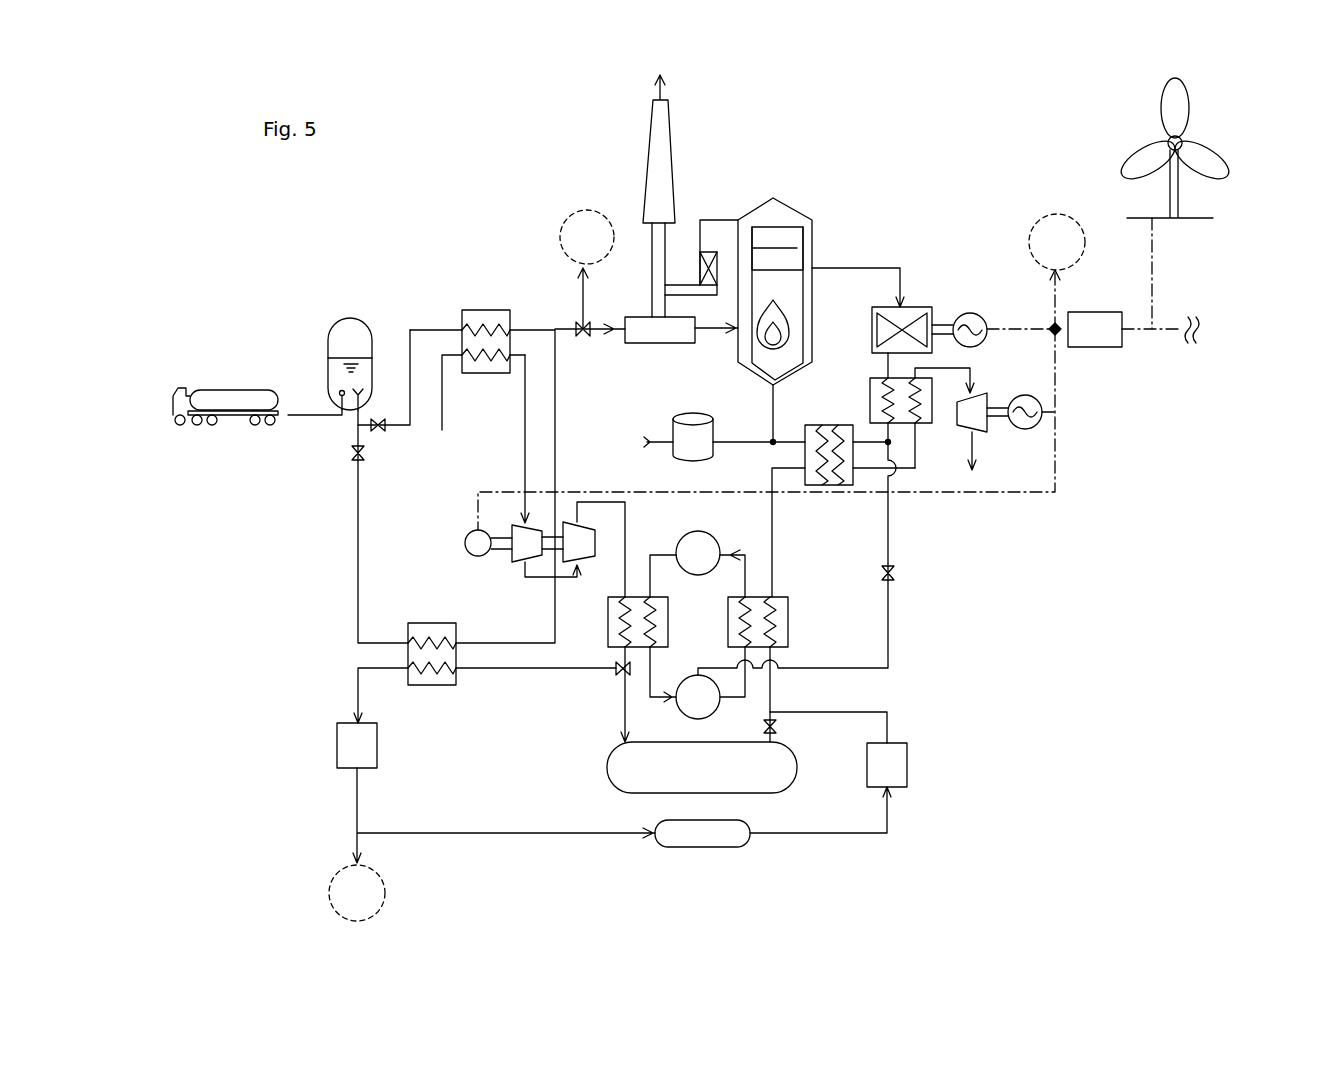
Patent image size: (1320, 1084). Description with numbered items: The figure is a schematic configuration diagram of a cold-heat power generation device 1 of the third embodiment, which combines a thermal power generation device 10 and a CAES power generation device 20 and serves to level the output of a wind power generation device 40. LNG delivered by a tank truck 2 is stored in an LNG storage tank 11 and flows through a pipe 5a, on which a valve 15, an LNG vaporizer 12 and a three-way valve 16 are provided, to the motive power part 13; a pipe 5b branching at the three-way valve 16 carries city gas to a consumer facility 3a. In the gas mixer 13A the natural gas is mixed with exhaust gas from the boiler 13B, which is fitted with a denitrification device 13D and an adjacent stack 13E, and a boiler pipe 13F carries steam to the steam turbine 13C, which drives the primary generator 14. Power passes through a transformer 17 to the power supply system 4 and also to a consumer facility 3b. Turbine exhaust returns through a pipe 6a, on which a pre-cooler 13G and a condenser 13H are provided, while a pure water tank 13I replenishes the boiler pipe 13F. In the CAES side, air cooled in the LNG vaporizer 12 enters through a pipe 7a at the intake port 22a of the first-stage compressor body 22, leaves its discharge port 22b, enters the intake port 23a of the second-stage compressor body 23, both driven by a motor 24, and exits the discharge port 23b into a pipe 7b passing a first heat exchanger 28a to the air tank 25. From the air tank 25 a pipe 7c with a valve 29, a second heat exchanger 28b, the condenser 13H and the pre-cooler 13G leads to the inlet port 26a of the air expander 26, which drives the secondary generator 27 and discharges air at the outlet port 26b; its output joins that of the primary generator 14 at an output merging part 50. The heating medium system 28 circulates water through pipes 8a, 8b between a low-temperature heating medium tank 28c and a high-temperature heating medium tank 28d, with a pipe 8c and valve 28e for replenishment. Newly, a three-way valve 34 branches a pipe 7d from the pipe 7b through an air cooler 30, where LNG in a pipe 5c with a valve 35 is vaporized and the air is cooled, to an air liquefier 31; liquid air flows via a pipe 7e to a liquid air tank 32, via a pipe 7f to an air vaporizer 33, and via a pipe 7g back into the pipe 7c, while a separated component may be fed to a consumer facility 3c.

The cold-heat power generation device 1 is at (254, 201).
The tank truck 2 is at (172, 395).
The consumer facility 3a is at (565, 220).
The consumer facility 3b is at (1030, 225).
The consumer facility 3c is at (330, 893).
The power supply system 4 is at (1178, 334).
The pipe 5a is at (410, 330).
The pipe 5b is at (587, 300).
The pipe 5c is at (358, 540).
The pipe 6a is at (765, 417).
The pipe 7a is at (525, 430).
The pipe 7b is at (620, 740).
The pipe 7c is at (773, 690).
The pipe 7d is at (555, 670).
The pipe 7e is at (360, 800).
The pipe 7f is at (887, 833).
The pipe 7g is at (888, 720).
The pipe 8a is at (652, 672).
The pipe 8b is at (725, 652).
The pipe 8c is at (890, 640).
The thermal power generation device 10 is at (855, 206).
The LNG storage tank 11 is at (335, 332).
The LNG vaporizer 12 is at (462, 325).
The motive power part 13 is at (763, 148).
The gas mixer 13A is at (655, 345).
The boiler 13B is at (815, 305).
The steam turbine 13C is at (930, 310).
The denitrification device 13D is at (707, 250).
The stack 13E is at (645, 170).
The boiler pipe 13F is at (775, 228).
The pre-cooler 13G is at (872, 392).
The condenser 13H is at (848, 430).
The pure water tank 13I is at (673, 450).
The primary generator 14 is at (985, 320).
The valve 15 is at (386, 430).
The three-way valve 16 is at (578, 320).
The transformer 17 is at (1112, 347).
The CAES power generation device 20 is at (278, 645).
The first-stage compressor body 22 is at (518, 562).
The intake port 22a is at (522, 520).
The discharge port 22b is at (525, 578).
The second-stage compressor body 23 is at (592, 548).
The intake port 23a is at (580, 570).
The discharge port 23b is at (577, 500).
The motor 24 is at (465, 550).
The air tank 25 is at (797, 775).
The air expander 26 is at (960, 418).
The inlet port 26a is at (975, 395).
The outlet port 26b is at (949, 457).
The secondary generator 27 is at (1025, 430).
The heating medium system 28 is at (752, 548).
The first heat exchanger 28a is at (627, 597).
The second heat exchanger 28b is at (790, 610).
The low-temperature heating medium tank 28c is at (712, 572).
The high-temperature heating medium tank 28d is at (690, 715).
The valve 28e is at (895, 573).
The valve 29 is at (778, 730).
The air cooler 30 is at (440, 687).
The air liquefier 31 is at (337, 742).
The liquid air tank 32 is at (667, 845).
The air vaporizer 33 is at (907, 762).
The three-way valve 34 is at (616, 676).
The valve 35 is at (352, 458).
The wind power generation device 40 is at (1188, 108).
The output merging part 50 is at (1060, 325).